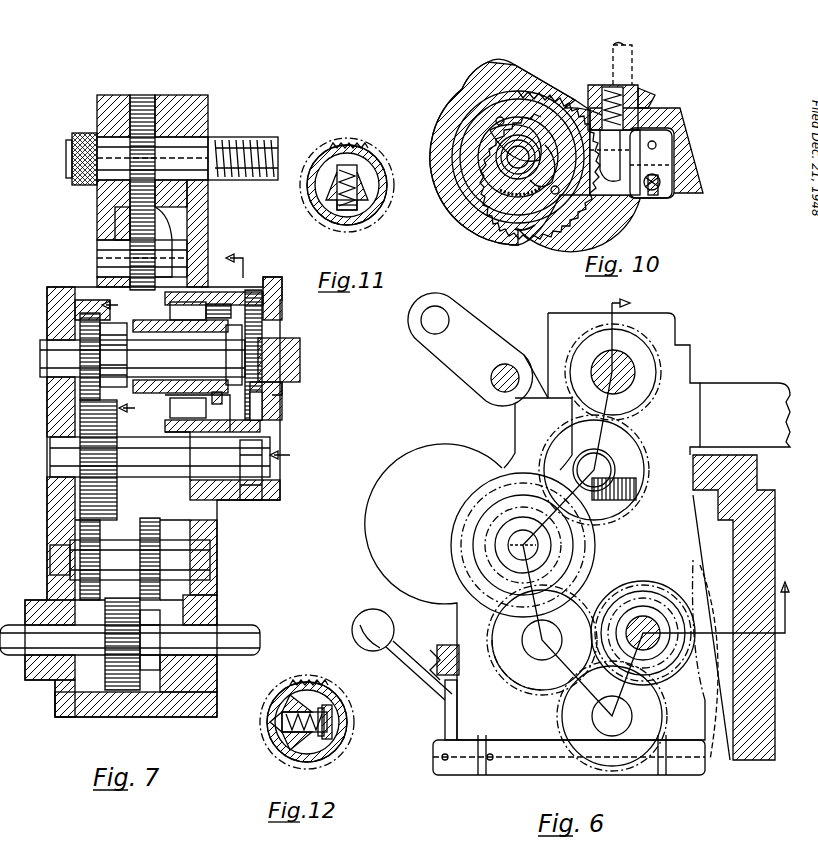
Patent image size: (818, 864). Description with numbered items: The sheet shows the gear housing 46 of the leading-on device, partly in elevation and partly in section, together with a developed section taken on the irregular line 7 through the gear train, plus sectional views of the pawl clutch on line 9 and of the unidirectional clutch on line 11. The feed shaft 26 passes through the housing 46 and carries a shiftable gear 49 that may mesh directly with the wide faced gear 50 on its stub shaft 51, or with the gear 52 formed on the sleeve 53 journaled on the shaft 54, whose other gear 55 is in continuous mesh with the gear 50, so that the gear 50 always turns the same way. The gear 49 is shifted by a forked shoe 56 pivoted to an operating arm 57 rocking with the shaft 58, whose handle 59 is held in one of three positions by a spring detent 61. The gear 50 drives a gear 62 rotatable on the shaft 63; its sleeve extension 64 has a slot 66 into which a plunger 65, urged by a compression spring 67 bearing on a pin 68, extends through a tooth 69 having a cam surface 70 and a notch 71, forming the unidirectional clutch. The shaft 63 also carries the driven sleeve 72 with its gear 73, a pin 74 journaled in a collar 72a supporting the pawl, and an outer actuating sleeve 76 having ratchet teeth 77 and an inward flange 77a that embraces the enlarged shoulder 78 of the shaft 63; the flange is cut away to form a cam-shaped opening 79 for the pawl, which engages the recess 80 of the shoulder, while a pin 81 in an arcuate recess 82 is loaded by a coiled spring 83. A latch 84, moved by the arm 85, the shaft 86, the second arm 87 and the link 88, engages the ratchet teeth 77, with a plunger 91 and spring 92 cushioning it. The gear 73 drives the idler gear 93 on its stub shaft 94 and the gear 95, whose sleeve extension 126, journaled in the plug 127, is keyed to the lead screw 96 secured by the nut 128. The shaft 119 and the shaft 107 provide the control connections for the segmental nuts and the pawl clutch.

In FIG. 6, the section-indicating line 7— 7 is at (658, 503).
In FIG. 7, the section line 9— 9 is at (263, 350).
In FIG. 7, the section line 11— 11 is at (127, 356).
In FIG. 7, the feed shaft 26 is at (236, 632).
In FIG. 6, the feed shaft 26 is at (637, 605).
In FIG. 7, the gear housing 46 is at (55, 498).
In FIG. 10, the gear housing 46 is at (672, 118).
In FIG. 6, the gear housing 46 is at (547, 536).
In FIG. 7, the shiftable gear 49 is at (120, 680).
In FIG. 6, the shiftable gear 49 is at (697, 625).
In FIG. 7, the wide faced gear 50 is at (110, 432).
In FIG. 6, the wide faced gear 50 is at (535, 696).
In FIG. 7, the stub shaft 51 is at (262, 466).
In FIG. 6, the stub shaft 51 is at (522, 650).
In FIG. 7, the gear 52 is at (152, 528).
In FIG. 7, the sleeve 53 is at (147, 525).
In FIG. 7, the shaft 54 is at (52, 556).
In FIG. 6, the shaft 54 is at (592, 718).
In FIG. 7, the gear 55 is at (80, 594).
In FIG. 6, the forked shoe 56 is at (705, 625).
In FIG. 6, the operating arm 57 is at (710, 765).
In FIG. 6, the shaft 58 is at (528, 768).
In FIG. 6, the handle or operating lever 59 is at (430, 688).
In FIG. 6, the spring detent 61 is at (448, 648).
In FIG. 7, the gear 62 is at (82, 325).
In FIG. 7, the shaft 63 is at (52, 358).
In FIG. 11, the shaft 63 is at (375, 190).
In FIG. 6, the shaft 63 is at (522, 532).
In FIG. 12, the shaft 63 is at (318, 690).
In FIG. 7, the cylindrical sleeve extension 64 is at (96, 315).
In FIG. 11, the cylindrical sleeve extension 64 is at (333, 158).
In FIG. 12, the cylindrical sleeve extension 64 is at (296, 688).
In FIG. 11, the slidable plunger 65 is at (355, 168).
In FIG. 12, the slidable plunger 65 is at (290, 735).
In FIG. 11, the circumferentially extending slot 66 is at (368, 178).
In FIG. 12, the circumferentially extending slot 66 is at (335, 718).
In FIG. 11, the compression spring 67 is at (326, 198).
In FIG. 11, the pin 68 is at (337, 206).
In FIG. 12, the pin 68 is at (328, 706).
In FIG. 12, the tooth 69 is at (272, 722).
In FIG. 12, the cam surface 70 is at (288, 708).
In FIG. 12, the notch 71 is at (288, 740).
In FIG. 7, the sleeve 72 is at (170, 405).
In FIG. 7, the collar 72a is at (280, 322).
In FIG. 7, the gear 73 is at (160, 457).
In FIG. 7, the pin 74 is at (206, 312).
In FIG. 7, the outer sleeve 76 is at (188, 408).
In FIG. 7, the ratchet teeth 77 is at (255, 290).
In FIG. 10, the ratchet teeth 77 is at (480, 105).
In FIG. 7, the inwardly extending flange 77a is at (285, 388).
In FIG. 10, the inwardly extending flange 77a is at (465, 150).
In FIG. 7, the enlarged shoulder 78 is at (290, 365).
In FIG. 10, the cam-shaped opening 79 is at (540, 115).
In FIG. 10, the cam-shaped recess 80 is at (552, 98).
In FIG. 7, the pin 81 is at (272, 410).
In FIG. 7, the arcuate recess 82 is at (234, 375).
In FIG. 10, the arcuate recess 82 is at (545, 222).
In FIG. 7, the coiled spring 83 is at (214, 395).
In FIG. 10, the coiled spring 83 is at (520, 232).
In FIG. 10, the toothed stop member or latch 84 is at (600, 180).
In FIG. 10, the arm 85 is at (660, 148).
In FIG. 10, the shaft 86 is at (660, 195).
In FIG. 10, the second arm 87 is at (652, 190).
In FIG. 10, the link 88 is at (632, 70).
In FIG. 10, the plunger 91 is at (648, 106).
In FIG. 10, the spring 92 is at (605, 86).
In FIG. 7, the idler gear 93 is at (120, 226).
In FIG. 7, the stub shaft 94 is at (100, 250).
In FIG. 6, the stub shaft 94 is at (598, 468).
In FIG. 7, the gear 95 is at (143, 112).
In FIG. 7, the lead screw 96 is at (248, 140).
In FIG. 6, the lead screw 96 is at (635, 374).
In FIG. 6, the shaft 107 is at (506, 395).
In FIG. 6, the shaft 119 is at (440, 318).
In FIG. 7, the sleeve-like extension 126 is at (112, 143).
In FIG. 7, the plug 127 is at (97, 198).
In FIG. 7, the nut 128 is at (75, 140).